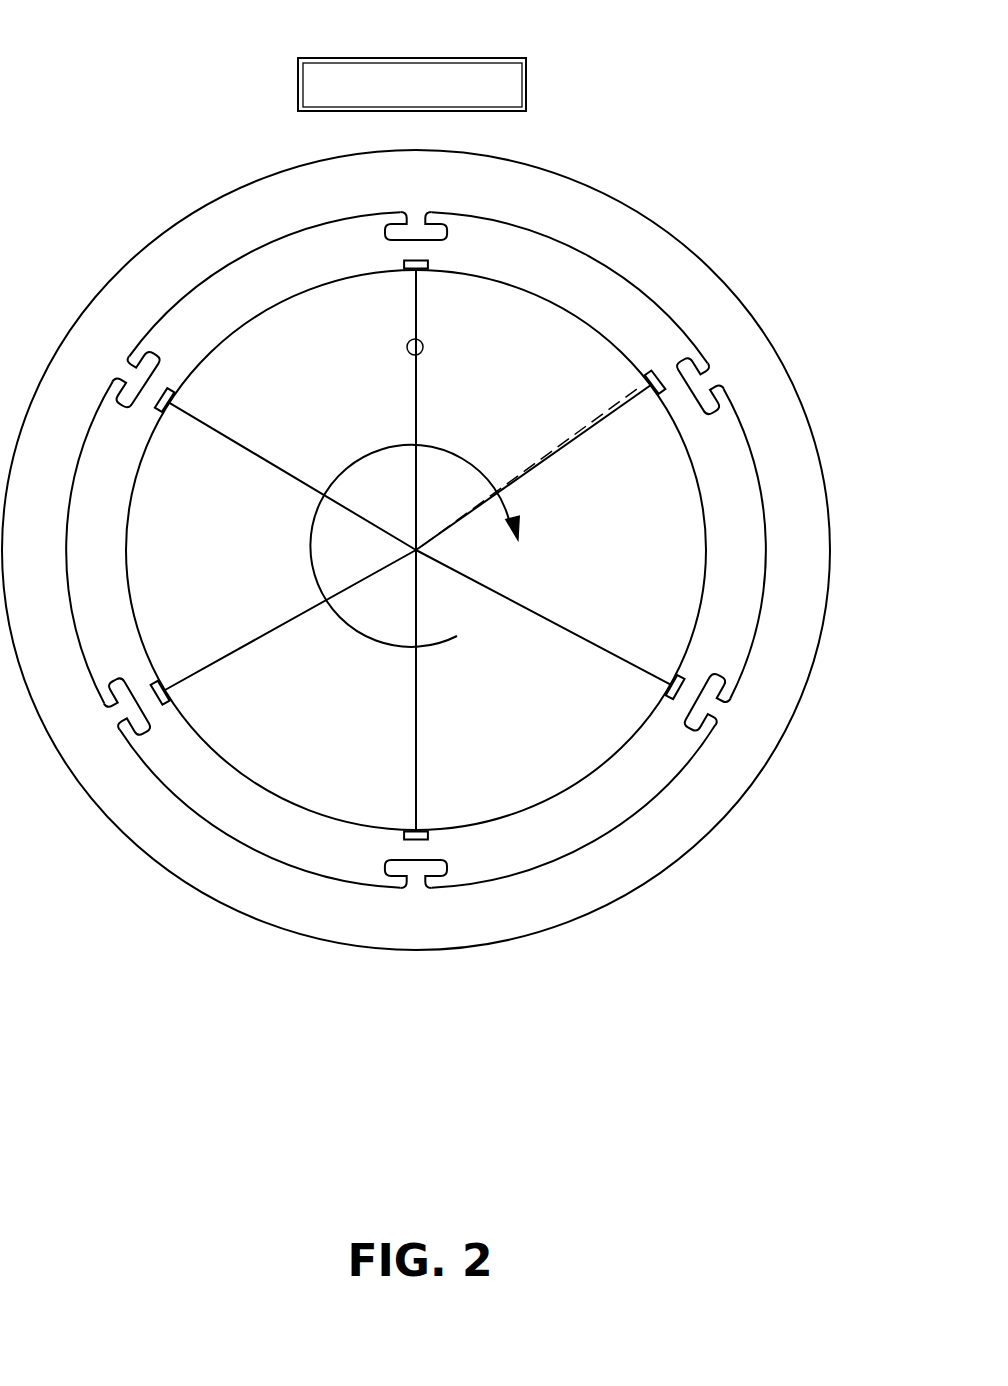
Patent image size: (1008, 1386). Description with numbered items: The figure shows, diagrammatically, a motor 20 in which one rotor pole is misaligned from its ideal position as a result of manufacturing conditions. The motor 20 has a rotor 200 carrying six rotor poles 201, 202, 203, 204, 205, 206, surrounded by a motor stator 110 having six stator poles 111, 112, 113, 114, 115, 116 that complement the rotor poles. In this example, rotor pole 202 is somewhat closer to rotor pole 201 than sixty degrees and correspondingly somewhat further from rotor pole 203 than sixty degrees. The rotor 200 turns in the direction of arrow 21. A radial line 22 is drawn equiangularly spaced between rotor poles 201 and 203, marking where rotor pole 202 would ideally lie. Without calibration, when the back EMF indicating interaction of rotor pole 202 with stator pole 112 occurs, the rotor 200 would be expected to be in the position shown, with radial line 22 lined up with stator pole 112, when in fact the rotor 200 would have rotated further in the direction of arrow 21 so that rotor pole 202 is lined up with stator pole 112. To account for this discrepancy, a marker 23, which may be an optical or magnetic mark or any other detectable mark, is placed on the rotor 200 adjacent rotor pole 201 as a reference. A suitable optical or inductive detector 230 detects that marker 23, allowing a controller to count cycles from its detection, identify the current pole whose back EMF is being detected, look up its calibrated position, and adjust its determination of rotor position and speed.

The motor 20 is at (815, 232).
The arrow 21 is at (354, 466).
The radial line 22 is at (578, 456).
The marker 23 is at (427, 352).
The motor stator 110 is at (782, 442).
The stator pole 111 is at (410, 216).
The stator pole 112 is at (703, 381).
The stator pole 113 is at (712, 710).
The stator pole 114 is at (416, 880).
The stator pole 115 is at (124, 716).
The stator pole 116 is at (122, 378).
The rotor 200 is at (705, 555).
The rotor pole 201 is at (421, 271).
The rotor pole 202 is at (643, 381).
The rotor pole 203 is at (662, 688).
The rotor pole 204 is at (420, 832).
The rotor pole 205 is at (170, 695).
The rotor pole 206 is at (170, 402).
The detector 230 is at (462, 58).